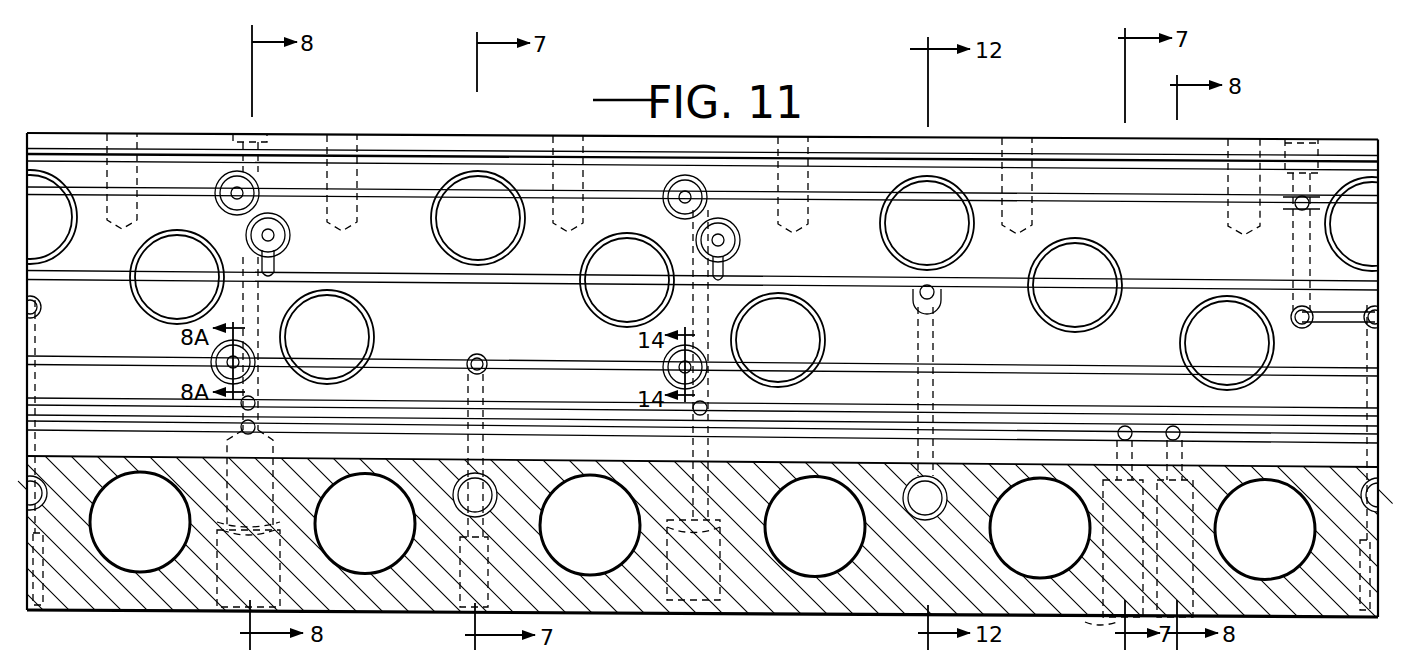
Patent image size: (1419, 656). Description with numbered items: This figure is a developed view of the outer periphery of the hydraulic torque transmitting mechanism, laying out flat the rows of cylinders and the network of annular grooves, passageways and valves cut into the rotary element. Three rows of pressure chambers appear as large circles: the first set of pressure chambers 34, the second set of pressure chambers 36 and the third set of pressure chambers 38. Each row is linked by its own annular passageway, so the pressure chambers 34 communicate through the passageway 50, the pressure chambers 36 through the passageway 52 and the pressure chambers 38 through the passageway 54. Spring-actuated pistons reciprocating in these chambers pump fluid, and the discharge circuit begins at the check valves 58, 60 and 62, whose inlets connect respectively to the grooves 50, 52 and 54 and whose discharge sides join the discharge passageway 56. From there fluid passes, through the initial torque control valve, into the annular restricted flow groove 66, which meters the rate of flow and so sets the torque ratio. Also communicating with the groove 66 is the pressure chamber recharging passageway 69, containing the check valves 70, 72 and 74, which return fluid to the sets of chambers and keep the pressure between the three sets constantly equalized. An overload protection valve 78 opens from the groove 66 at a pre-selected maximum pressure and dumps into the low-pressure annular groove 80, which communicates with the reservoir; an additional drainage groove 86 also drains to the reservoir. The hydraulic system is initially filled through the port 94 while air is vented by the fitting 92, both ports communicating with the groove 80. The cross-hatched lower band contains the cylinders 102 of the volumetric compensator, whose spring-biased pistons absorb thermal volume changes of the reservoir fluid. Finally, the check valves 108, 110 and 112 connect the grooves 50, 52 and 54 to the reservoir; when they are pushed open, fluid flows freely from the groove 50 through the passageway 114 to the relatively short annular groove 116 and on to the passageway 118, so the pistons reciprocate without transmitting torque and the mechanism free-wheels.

The pressure chambers 34 is at (41, 180).
The pressure chambers 36 is at (172, 239).
The pressure chambers 38 is at (322, 299).
The passageway 50 is at (380, 199).
The passageway 52 is at (398, 284).
The passageway 54 is at (510, 358).
The discharge passageway 56 is at (708, 318).
The check valve 58 is at (682, 213).
The check valve 60 is at (740, 247).
The check valve 62 is at (700, 381).
The annular restricted flow groove 66 is at (978, 406).
The pressure chamber recharging passageway 69 is at (258, 316).
The check valve 70 is at (232, 178).
The check valve 72 is at (290, 243).
The check valve 74 is at (250, 375).
The overload protection valve 78 is at (223, 612).
The annular groove 80 is at (1232, 428).
The drainage groove 86 is at (1092, 163).
The fitting 92 is at (1198, 616).
The port 94 is at (1096, 620).
The cylinders 102 is at (782, 497).
The check valve 108 is at (50, 478).
The check valve 110 is at (921, 488).
The check valve 112 is at (480, 482).
The passageway 114 is at (1292, 226).
The annular groove 116 is at (1367, 327).
The passageway 118 is at (45, 330).